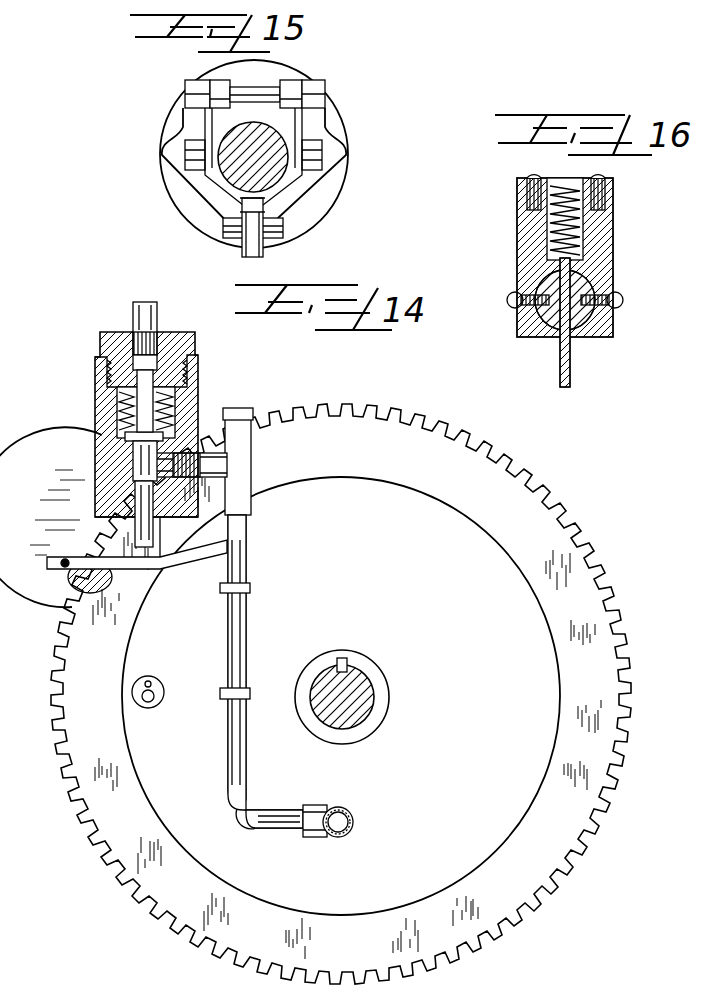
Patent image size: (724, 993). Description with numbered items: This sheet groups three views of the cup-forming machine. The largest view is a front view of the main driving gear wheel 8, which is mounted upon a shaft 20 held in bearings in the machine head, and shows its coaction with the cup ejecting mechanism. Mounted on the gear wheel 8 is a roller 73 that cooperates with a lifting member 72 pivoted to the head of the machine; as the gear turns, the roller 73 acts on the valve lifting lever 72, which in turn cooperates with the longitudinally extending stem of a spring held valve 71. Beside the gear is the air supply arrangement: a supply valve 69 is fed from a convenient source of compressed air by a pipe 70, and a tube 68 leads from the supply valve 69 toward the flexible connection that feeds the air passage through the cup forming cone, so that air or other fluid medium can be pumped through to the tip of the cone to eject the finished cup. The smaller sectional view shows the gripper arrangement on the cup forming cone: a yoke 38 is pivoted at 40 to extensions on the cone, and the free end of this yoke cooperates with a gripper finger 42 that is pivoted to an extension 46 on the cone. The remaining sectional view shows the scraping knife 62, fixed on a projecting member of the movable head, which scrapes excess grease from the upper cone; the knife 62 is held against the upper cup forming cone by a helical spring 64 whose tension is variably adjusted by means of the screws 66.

In FIG. 14, the gear wheel 8 is at (567, 551).
In FIG. 14, the shaft 20 is at (363, 689).
In FIG. 15, the yoke 38 is at (313, 130).
In FIG. 15, the pivot 40 is at (312, 96).
In FIG. 15, the gripper finger 42 is at (260, 250).
In FIG. 15, the extension 46 is at (275, 228).
In FIG. 16, the scraping knife 62 is at (571, 366).
In FIG. 16, the helical spring 64 is at (583, 235).
In FIG. 16, the screws 66 is at (528, 173).
In FIG. 14, the tube 68 is at (246, 749).
In FIG. 14, the supply valve 69 is at (100, 455).
In FIG. 14, the pipe 70 is at (137, 305).
In FIG. 14, the spring held valve 71 is at (188, 447).
In FIG. 14, the lifting member 72 is at (167, 569).
In FIG. 14, the roller 73 is at (65, 560).